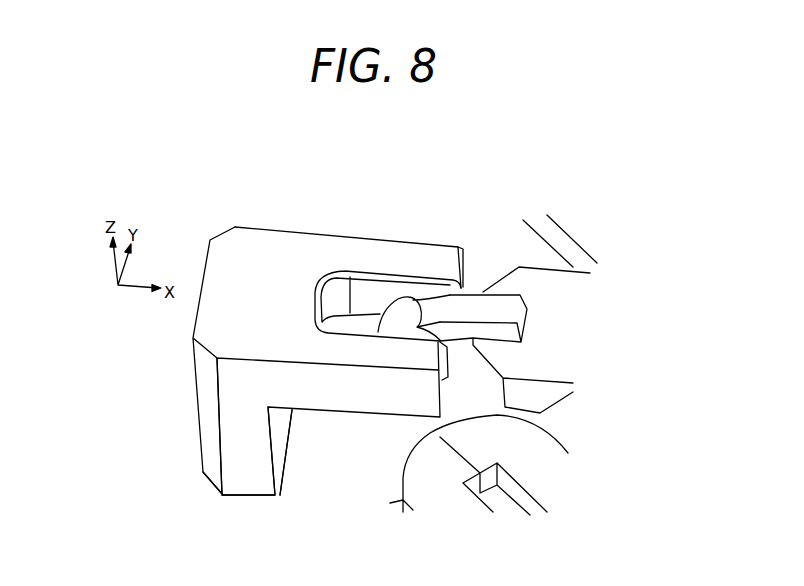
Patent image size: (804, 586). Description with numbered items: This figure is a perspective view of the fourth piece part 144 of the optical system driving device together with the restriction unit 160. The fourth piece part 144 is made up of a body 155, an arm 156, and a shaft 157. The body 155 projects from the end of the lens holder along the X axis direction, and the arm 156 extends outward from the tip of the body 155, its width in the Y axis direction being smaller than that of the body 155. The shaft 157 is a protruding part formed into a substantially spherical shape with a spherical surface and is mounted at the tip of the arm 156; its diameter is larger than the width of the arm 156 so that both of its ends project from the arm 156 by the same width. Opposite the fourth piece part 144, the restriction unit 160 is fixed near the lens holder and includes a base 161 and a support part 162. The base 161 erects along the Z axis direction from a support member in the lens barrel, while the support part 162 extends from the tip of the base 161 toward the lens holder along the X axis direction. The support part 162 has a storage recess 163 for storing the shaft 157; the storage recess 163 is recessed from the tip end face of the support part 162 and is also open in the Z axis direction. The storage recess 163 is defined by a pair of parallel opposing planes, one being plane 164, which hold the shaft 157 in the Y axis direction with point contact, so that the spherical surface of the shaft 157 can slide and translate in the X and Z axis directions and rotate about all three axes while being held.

The restriction unit 160 is at (235, 227).
The base 161 is at (247, 495).
The support part 162 is at (300, 237).
The storage recess 163 is at (357, 272).
The plane 164 is at (378, 287).
The shaft 157 is at (398, 310).
The arm 156 is at (470, 298).
The fourth piece part 144 is at (519, 268).
The body 155 is at (560, 277).